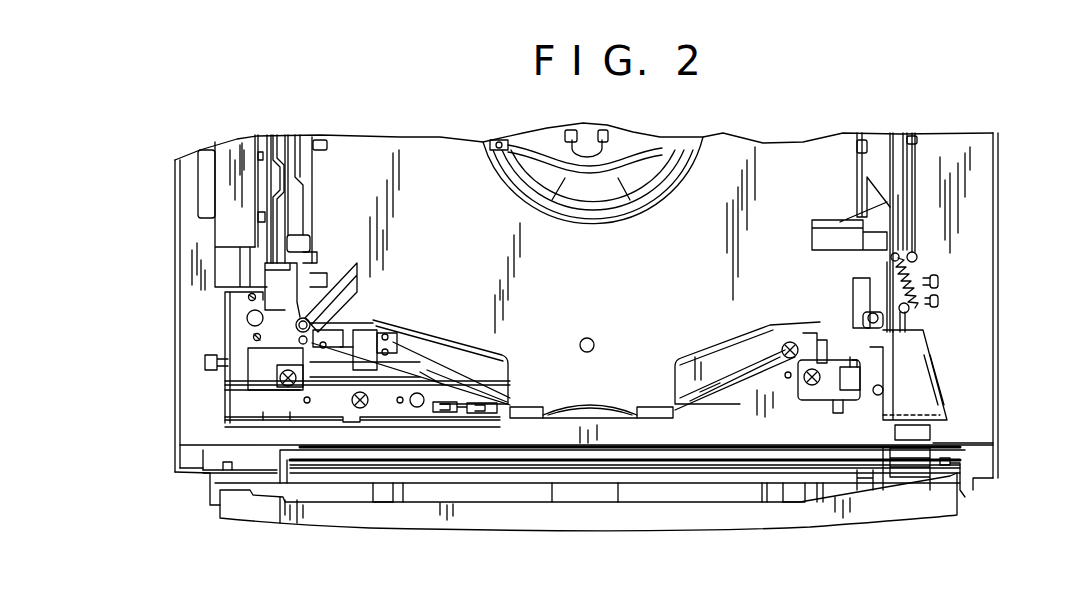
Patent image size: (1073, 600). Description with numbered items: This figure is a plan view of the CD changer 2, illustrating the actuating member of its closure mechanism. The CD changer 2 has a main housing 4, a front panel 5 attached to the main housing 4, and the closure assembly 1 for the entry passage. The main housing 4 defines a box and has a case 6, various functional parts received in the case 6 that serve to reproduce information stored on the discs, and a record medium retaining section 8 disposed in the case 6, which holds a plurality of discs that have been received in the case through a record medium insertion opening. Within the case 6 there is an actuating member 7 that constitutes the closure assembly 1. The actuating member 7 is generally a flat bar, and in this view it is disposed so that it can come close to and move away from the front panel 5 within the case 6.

The closure assembly 1 is at (972, 488).
The CD changer 2 is at (1003, 203).
The main housing 4 is at (1000, 235).
The front panel 5 is at (960, 510).
The case 6 is at (972, 297).
The actuating member 7 is at (935, 432).
The record medium retaining section 8 is at (773, 185).